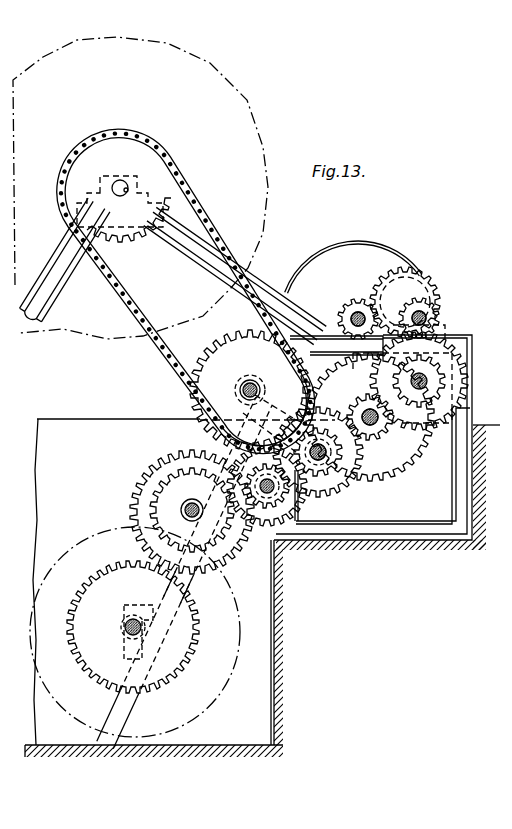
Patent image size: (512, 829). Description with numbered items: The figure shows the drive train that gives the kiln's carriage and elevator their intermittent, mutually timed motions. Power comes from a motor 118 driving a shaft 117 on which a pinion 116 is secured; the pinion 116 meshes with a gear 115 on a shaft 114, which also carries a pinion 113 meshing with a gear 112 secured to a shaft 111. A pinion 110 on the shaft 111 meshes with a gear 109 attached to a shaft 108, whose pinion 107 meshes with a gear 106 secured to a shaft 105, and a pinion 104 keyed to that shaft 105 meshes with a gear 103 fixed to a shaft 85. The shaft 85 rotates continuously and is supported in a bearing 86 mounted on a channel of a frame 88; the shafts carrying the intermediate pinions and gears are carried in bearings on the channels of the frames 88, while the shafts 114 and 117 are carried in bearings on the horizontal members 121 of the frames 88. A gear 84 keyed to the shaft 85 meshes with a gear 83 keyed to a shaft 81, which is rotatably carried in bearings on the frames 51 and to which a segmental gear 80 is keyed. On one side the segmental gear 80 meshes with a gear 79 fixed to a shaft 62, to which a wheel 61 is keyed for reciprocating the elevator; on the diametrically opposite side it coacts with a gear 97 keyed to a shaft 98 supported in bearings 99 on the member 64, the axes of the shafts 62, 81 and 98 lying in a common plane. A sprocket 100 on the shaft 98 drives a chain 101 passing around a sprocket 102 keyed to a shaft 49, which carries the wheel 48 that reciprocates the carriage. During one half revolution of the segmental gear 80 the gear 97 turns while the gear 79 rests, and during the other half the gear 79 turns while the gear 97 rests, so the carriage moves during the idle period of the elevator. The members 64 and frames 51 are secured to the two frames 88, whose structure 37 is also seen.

The inner housing box 37 is at (382, 466).
The wheel 48 is at (250, 100).
The shaft 49 is at (124, 181).
The frames 51 is at (195, 254).
The wheel 61 is at (220, 697).
The shaft 62 is at (126, 628).
The member 64 is at (127, 721).
The gear 79 is at (184, 631).
The segmental gear 80 is at (128, 513).
The shaft 81 is at (186, 510).
The gear 83 is at (143, 496).
The gear 84 is at (230, 487).
The shaft 85 is at (263, 494).
The bearing 86 is at (265, 481).
The frame 88 is at (475, 418).
The gear 97 is at (205, 424).
The shaft 98 is at (245, 386).
The bearings 99 is at (276, 374).
The sprocket 100 is at (212, 390).
The chain 101 is at (134, 312).
The sprocket 102 is at (152, 167).
The gear 103 is at (326, 462).
The pinion 104 is at (330, 462).
The shaft 105 is at (348, 474).
The gear 106 is at (388, 474).
The pinion 107 is at (385, 451).
The shaft 108 is at (398, 438).
The gear 109 is at (403, 429).
The pinion 110 is at (398, 362).
The shaft 111 is at (405, 356).
The gear 112 is at (456, 336).
The pinion 113 is at (438, 290).
The shaft 114 is at (427, 300).
The gear 115 is at (414, 268).
The pinion 116 is at (363, 300).
The shaft 117 is at (356, 308).
The motor 118 is at (355, 252).
The horizontal members 121 is at (323, 334).